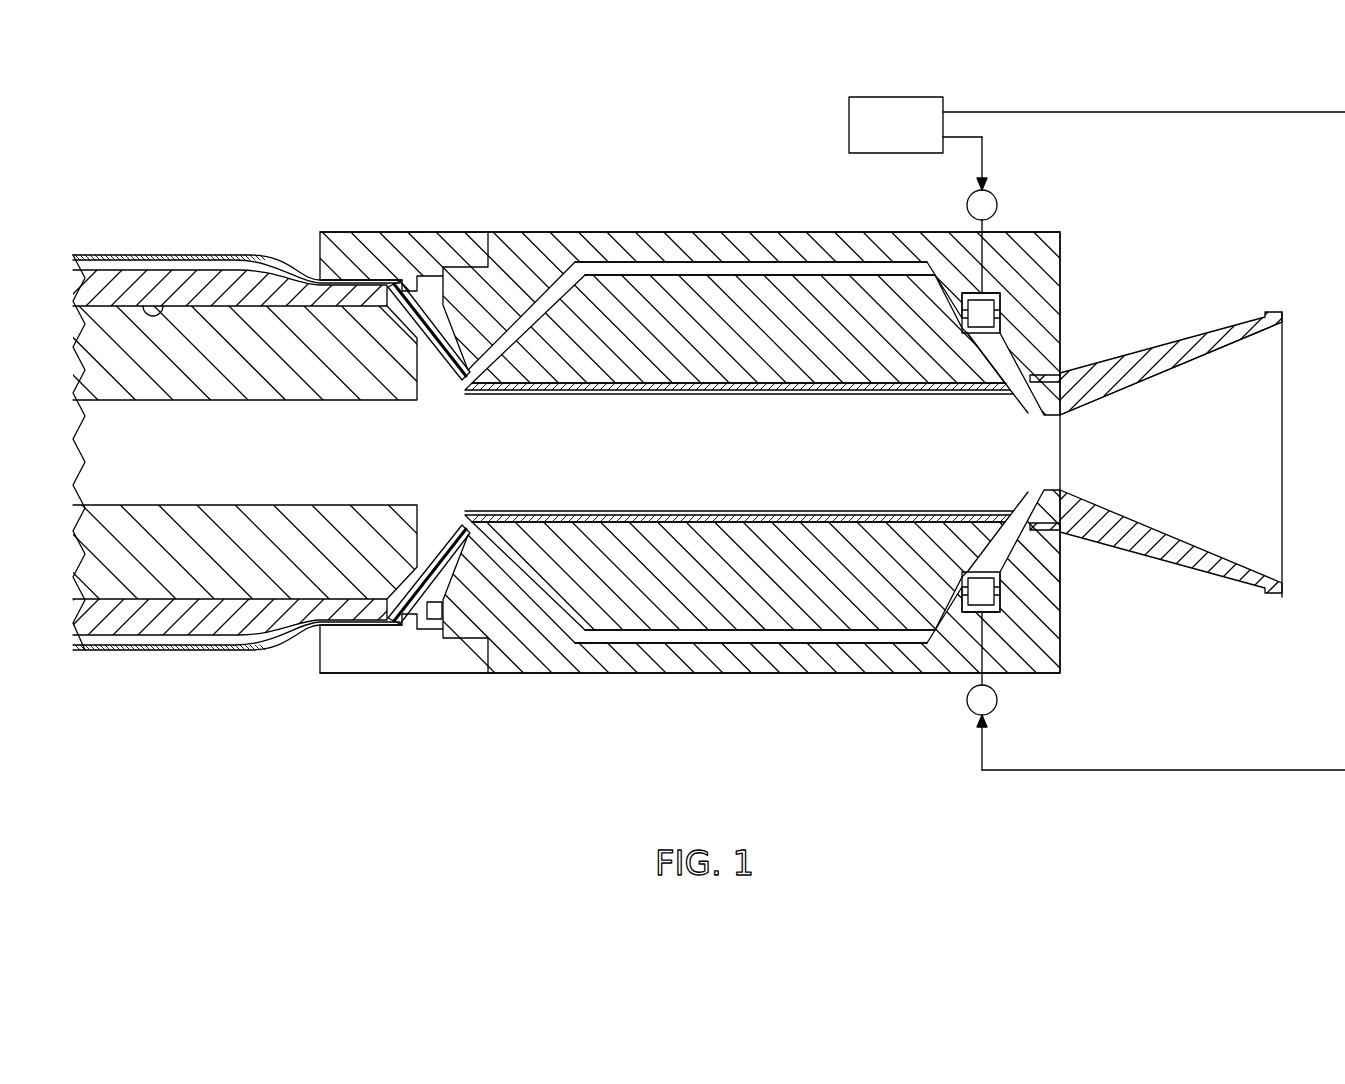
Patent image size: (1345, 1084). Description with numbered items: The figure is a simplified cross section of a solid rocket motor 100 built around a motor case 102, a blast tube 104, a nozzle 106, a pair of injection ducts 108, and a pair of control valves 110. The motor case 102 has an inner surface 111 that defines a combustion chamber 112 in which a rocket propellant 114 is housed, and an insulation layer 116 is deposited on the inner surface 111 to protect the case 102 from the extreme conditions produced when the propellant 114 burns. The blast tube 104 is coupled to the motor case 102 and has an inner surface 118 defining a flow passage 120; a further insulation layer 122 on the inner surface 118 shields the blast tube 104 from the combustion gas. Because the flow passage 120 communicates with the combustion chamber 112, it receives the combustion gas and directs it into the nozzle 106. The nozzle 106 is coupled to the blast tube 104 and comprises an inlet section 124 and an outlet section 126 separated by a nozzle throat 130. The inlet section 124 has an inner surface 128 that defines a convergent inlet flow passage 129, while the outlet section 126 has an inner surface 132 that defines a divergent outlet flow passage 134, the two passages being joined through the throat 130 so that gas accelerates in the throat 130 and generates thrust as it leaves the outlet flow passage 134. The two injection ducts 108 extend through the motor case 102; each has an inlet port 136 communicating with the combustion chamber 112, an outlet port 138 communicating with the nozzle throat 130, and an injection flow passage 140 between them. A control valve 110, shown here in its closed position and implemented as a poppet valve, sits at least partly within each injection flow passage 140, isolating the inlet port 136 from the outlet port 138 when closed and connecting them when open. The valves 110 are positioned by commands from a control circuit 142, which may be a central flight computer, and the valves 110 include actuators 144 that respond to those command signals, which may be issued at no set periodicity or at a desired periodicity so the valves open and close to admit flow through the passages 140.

The solid rocket motor 100 is at (510, 178).
The motor case 102 is at (275, 262).
The blast tube 104 is at (549, 394).
The nozzle 106 is at (1185, 339).
The injection ducts 108 is at (662, 262).
The control valves 110 is at (1003, 313).
The inner surface 111 is at (163, 306).
The combustion chamber 112 is at (228, 466).
The rocket propellant 114 is at (148, 390).
The insulation layer 116 is at (115, 274).
The inner surface 118 is at (768, 395).
The flow passage 120 is at (705, 471).
The insulation layer 122 is at (632, 395).
The inlet section 124 is at (937, 462).
The outlet section 126 is at (1292, 515).
The inner surface 128 is at (1012, 397).
The inlet flow passage 129 is at (1010, 472).
The nozzle throat 130 is at (1057, 482).
The inner surface 132 is at (1174, 368).
The outlet flow passage 134 is at (1250, 469).
The inlet port 136 is at (470, 390).
The outlet port 138 is at (1005, 405).
The injection flow passage 140 is at (727, 265).
The control circuit 142 is at (900, 96).
The actuators 144 is at (998, 203).